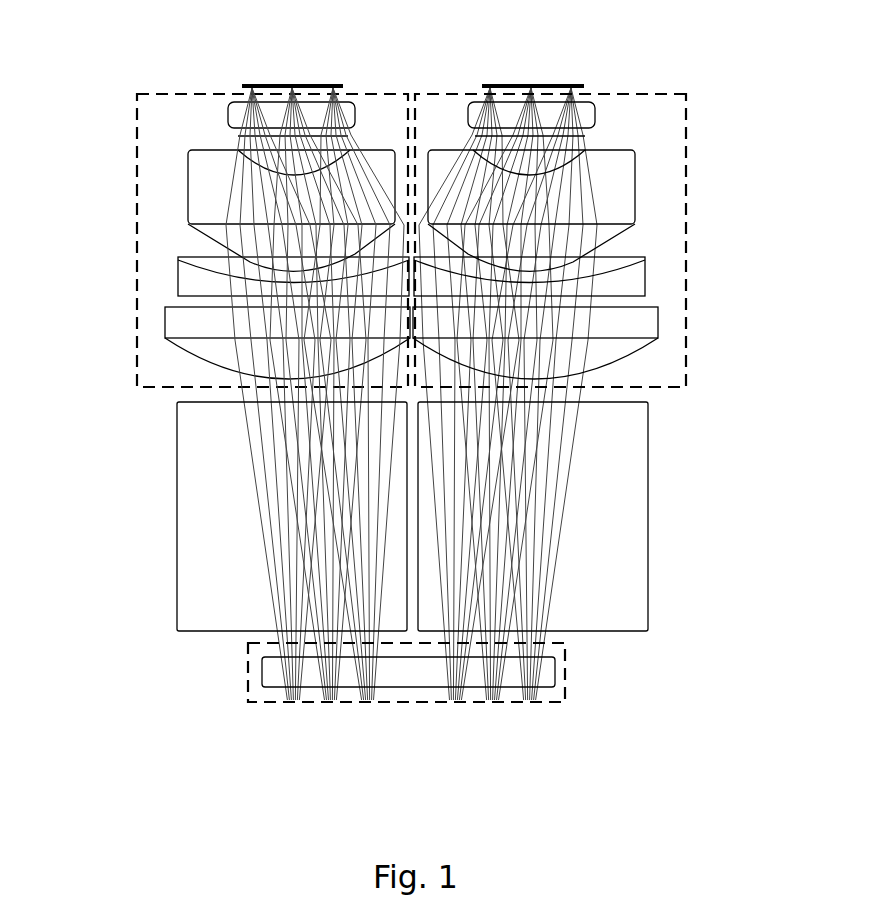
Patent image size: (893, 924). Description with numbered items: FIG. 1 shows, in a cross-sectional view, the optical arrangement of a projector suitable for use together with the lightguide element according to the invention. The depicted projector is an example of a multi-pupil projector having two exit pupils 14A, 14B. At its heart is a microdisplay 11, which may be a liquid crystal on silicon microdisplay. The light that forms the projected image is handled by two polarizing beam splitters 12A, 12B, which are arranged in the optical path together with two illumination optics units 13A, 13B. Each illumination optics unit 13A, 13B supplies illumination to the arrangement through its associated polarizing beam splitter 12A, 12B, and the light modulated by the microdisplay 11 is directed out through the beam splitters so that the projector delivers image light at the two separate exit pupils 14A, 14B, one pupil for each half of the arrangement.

The microdisplay 11 is at (567, 672).
The polarizing beam splitter 12A is at (177, 517).
The polarizing beam splitter 12B is at (648, 511).
The illumination optics unit 13A is at (137, 276).
The illumination optics unit 13B is at (684, 250).
The exit pupil 14A is at (293, 83).
The exit pupil 14B is at (530, 83).